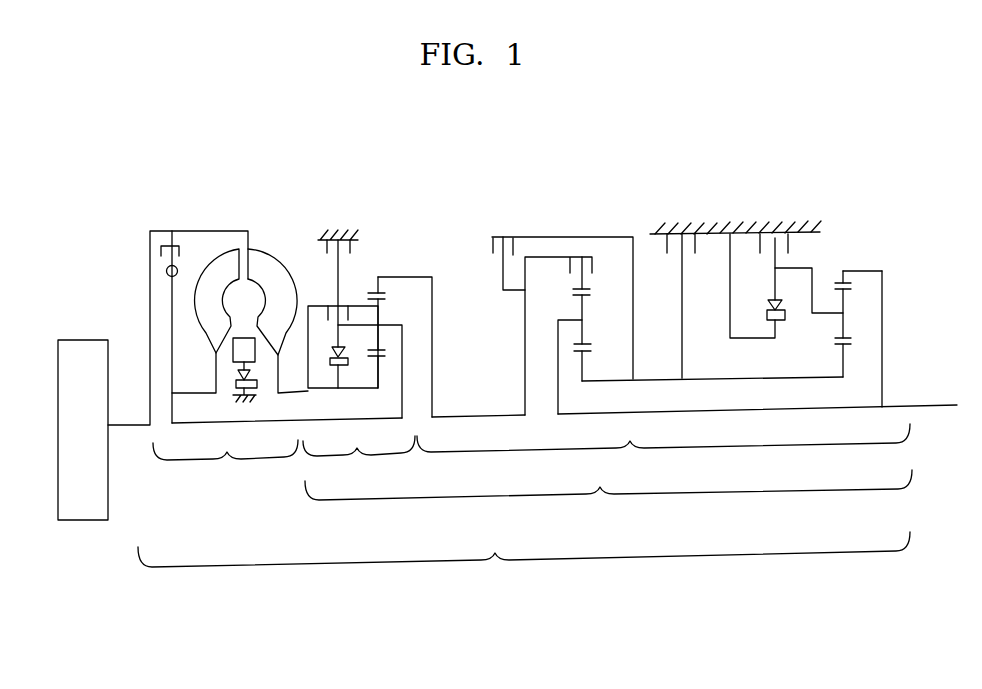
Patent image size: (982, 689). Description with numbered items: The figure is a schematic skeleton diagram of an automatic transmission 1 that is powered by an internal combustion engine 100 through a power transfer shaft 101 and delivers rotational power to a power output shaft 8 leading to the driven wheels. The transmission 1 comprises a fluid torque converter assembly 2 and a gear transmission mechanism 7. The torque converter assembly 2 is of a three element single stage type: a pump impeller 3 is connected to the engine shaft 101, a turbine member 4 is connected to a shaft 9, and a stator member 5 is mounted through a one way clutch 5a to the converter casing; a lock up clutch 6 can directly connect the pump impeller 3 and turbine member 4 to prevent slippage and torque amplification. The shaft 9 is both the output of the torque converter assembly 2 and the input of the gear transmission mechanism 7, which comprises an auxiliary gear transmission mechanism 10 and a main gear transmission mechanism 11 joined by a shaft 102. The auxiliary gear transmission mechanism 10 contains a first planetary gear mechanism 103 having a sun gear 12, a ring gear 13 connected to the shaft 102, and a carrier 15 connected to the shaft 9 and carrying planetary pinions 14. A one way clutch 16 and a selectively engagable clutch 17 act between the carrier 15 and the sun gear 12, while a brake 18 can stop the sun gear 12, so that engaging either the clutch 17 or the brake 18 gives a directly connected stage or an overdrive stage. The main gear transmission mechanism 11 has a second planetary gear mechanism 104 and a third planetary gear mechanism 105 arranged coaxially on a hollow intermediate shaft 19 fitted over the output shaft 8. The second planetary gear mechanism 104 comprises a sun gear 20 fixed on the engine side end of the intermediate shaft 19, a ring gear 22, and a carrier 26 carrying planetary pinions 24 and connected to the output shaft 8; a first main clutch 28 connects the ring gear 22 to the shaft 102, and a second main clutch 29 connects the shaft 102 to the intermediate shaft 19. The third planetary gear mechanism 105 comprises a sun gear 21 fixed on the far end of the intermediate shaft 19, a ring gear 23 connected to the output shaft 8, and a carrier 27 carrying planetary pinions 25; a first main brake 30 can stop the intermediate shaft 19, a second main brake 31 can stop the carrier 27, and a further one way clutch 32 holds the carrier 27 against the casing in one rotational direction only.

The transmission 1 is at (524, 564).
The fluid torque converter assembly 2 is at (225, 465).
The pump impeller 3 is at (266, 270).
The turbine member 4 is at (206, 319).
The stator member 5 is at (235, 356).
The one way clutch 5a is at (237, 385).
The lock up clutch 6 is at (174, 316).
The gear transmission mechanism 7 is at (608, 501).
The power output shaft 8 is at (934, 405).
The power output shaft of the torque converter 9 is at (328, 421).
The auxiliary gear transmission mechanism 10 is at (359, 463).
The main gear transmission mechanism 11 is at (663, 456).
The sun gear 12 is at (385, 360).
The ring gear 13 is at (372, 293).
The planetary pinions 14 is at (385, 298).
The carrier 15 is at (402, 354).
The one way clutch F0 16 is at (348, 365).
The clutch C0 17 is at (332, 305).
The brake B0 18 is at (333, 240).
The hollow intermediate shaft 19 is at (697, 379).
The sun gear 20 is at (589, 351).
The sun gear 21 is at (846, 343).
The ring gear 22 is at (589, 291).
The ring gear 23 is at (849, 281).
The planetary pinions 24 is at (583, 331).
The planetary pinions 25 is at (843, 328).
The carrier 26 is at (558, 326).
The carrier 27 is at (813, 296).
The clutch C1 28 is at (590, 256).
The clutch C2 29 is at (501, 236).
The brake B1 30 is at (689, 233).
The brake B2 31 is at (785, 243).
The one way clutch F1 32 is at (770, 317).
The internal combustion engine 100 is at (89, 520).
The power transfer shaft 101 is at (135, 424).
The power output shaft of the auxiliary gear transmission mechanism 102 is at (473, 413).
The first planetary gear mechanism 103 is at (417, 317).
The second planetary gear mechanism 104 is at (605, 297).
The third planetary gear mechanism 105 is at (865, 293).